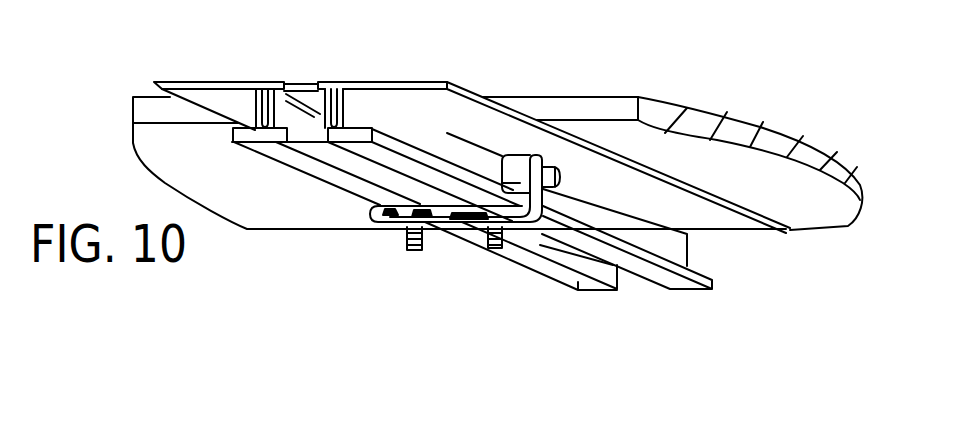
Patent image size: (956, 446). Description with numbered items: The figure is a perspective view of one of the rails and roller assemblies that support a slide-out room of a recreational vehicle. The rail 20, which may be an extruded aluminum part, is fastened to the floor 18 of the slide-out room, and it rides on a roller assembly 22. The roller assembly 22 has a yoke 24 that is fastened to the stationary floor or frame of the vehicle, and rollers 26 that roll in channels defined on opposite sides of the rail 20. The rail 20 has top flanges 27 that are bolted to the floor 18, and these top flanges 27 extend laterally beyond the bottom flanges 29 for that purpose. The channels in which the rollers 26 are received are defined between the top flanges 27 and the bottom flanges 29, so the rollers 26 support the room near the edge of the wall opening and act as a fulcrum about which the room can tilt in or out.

The floor 18 is at (757, 127).
The rail 20 is at (293, 160).
The roller assembly 22 is at (472, 235).
The yoke 24 is at (458, 233).
The rollers 26 is at (503, 155).
The top flanges 27 is at (245, 82).
The bottom flanges 29 is at (577, 290).